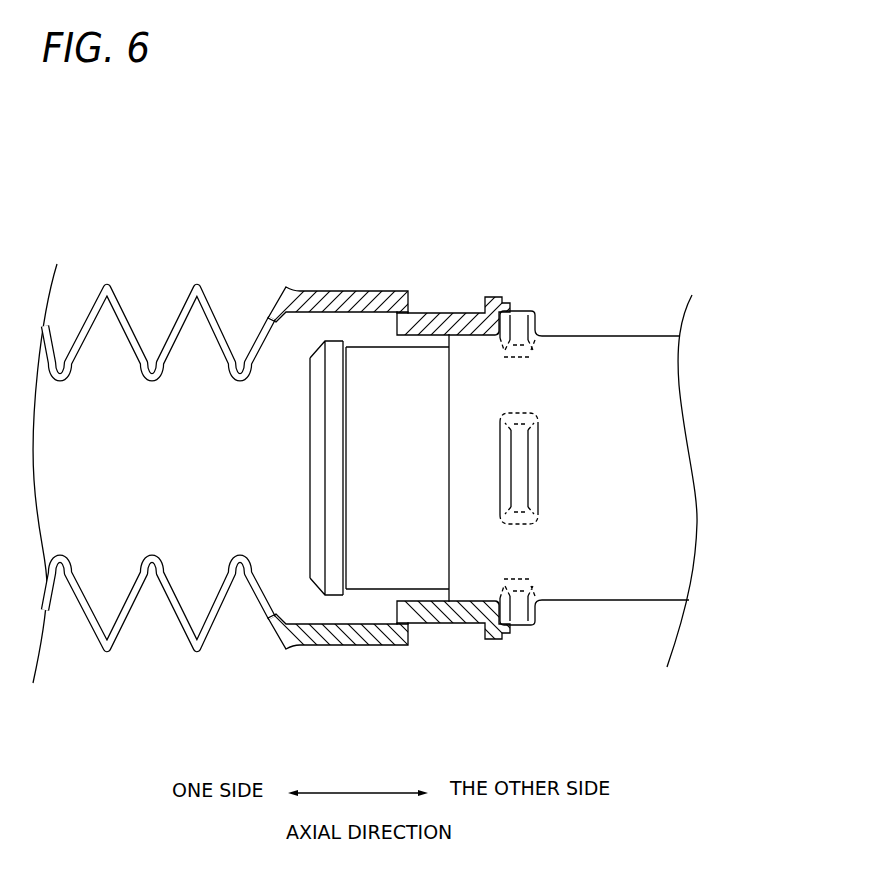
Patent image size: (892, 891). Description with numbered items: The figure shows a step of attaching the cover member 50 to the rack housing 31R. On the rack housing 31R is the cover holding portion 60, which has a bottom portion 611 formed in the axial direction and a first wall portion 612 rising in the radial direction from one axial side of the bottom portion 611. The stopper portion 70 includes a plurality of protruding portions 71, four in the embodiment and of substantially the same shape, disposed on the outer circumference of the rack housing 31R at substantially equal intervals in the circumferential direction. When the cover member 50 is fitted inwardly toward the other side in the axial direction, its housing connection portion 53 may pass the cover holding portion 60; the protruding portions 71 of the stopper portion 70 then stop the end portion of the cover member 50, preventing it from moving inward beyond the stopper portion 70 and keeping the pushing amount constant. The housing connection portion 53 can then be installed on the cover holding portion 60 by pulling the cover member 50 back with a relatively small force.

The cover member 50 is at (176, 252).
The housing connection portion 53 is at (441, 308).
The cover holding portion 60 is at (375, 457).
The bottom portion 611 is at (389, 549).
The first wall portion 612 is at (441, 598).
The rack housing 31R is at (650, 312).
The stopper portion 70 is at (577, 495).
The protruding portions 71 is at (536, 341).